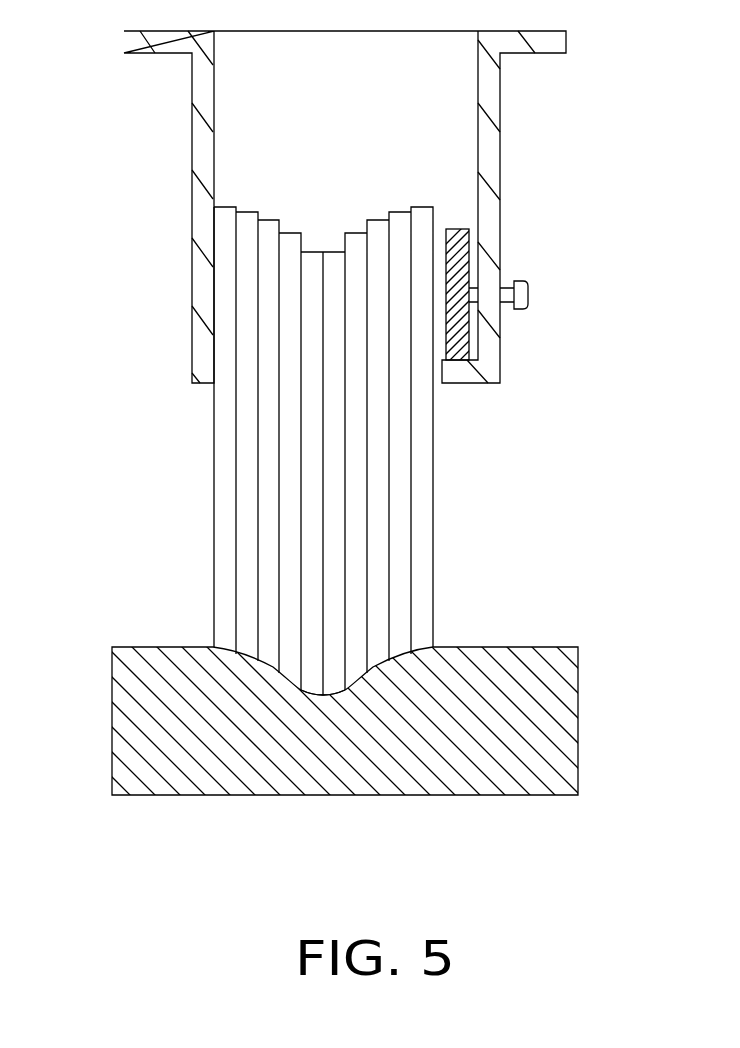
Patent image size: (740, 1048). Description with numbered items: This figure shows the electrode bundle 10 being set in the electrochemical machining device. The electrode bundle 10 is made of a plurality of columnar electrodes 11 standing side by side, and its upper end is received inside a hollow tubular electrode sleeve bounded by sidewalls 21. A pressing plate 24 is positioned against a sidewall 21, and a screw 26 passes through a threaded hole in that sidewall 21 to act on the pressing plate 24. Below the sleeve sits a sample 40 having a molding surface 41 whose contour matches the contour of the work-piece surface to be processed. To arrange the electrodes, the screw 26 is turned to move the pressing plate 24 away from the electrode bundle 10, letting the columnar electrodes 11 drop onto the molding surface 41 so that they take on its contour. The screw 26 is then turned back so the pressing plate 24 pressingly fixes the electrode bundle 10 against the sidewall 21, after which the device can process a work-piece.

The electrode bundle 10 is at (273, 451).
The columnar electrodes 11 is at (403, 483).
The sidewalls 21 is at (500, 152).
The pressing plates 24 is at (462, 268).
The screws 26 is at (538, 296).
The sample 40 is at (548, 730).
The molding surface 41 is at (358, 686).